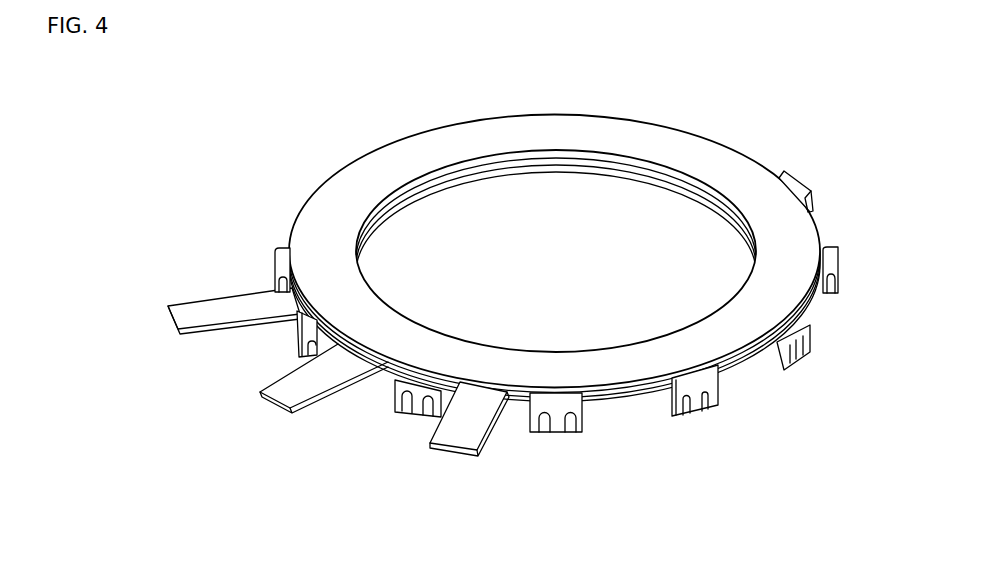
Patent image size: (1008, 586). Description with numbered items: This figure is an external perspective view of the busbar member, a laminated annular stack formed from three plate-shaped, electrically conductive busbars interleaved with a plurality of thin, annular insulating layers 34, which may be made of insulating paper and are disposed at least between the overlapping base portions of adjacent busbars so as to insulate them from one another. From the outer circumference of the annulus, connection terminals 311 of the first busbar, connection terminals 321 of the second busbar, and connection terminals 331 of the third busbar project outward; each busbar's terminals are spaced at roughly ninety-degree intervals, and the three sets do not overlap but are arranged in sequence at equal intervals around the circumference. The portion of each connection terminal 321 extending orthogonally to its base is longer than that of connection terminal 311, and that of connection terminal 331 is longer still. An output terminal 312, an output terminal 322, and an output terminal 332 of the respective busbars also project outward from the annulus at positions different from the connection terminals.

The insulating layer 34 is at (617, 162).
The output terminal 312 is at (190, 318).
The output terminal 322 is at (282, 395).
The output terminal 332 is at (455, 440).
The connection terminal 311 is at (410, 405).
The connection terminal 321 is at (280, 251).
The connection terminal 331 is at (300, 340).